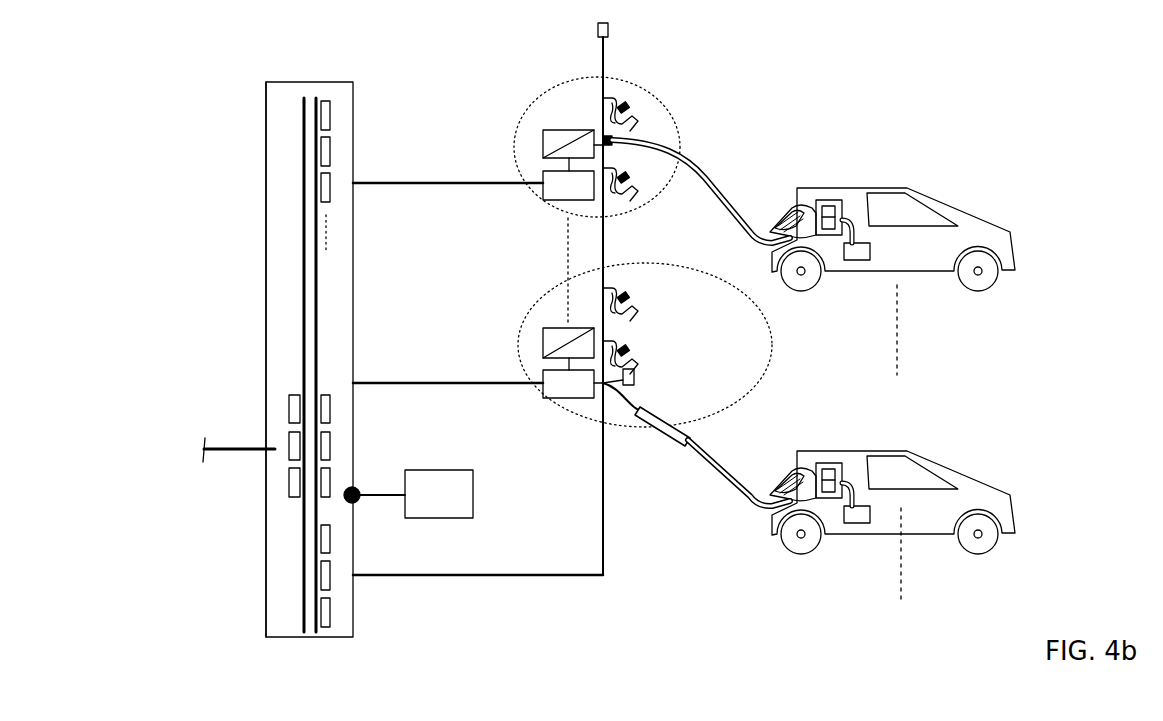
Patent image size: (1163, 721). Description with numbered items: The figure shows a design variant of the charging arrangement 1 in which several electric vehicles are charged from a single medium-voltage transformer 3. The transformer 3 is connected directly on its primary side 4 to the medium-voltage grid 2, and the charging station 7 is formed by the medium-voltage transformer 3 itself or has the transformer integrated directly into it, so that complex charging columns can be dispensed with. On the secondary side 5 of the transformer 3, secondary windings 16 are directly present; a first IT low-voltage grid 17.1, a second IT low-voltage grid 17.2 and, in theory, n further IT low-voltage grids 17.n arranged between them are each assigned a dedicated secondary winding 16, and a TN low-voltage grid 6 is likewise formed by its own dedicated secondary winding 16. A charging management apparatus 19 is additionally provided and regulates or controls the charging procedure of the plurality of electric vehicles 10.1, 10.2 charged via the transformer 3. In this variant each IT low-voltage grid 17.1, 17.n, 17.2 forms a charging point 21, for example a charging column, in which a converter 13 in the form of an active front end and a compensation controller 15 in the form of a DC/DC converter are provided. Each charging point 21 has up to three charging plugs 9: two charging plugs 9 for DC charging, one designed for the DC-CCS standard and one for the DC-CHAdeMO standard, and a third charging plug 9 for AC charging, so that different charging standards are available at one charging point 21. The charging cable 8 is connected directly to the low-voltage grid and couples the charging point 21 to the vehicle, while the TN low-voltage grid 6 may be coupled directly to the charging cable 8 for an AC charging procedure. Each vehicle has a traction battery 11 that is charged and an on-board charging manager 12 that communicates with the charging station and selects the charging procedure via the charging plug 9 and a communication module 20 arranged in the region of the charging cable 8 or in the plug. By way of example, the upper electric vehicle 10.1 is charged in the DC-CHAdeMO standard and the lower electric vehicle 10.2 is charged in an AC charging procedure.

The charging arrangement 1 is at (776, 106).
The medium-voltage grid 2 is at (215, 438).
The medium-voltage transformer 3 is at (337, 81).
The primary side 4 is at (273, 206).
The secondary side 5 is at (345, 113).
The TN low-voltage grid 6 is at (574, 578).
The charging station 7 is at (279, 78).
The charging cable 8 is at (712, 170).
The charging plug 9 is at (812, 470).
The upper electric vehicle 10.1 is at (967, 212).
The lower electric vehicle 10.2 is at (967, 475).
The traction battery 11 is at (857, 262).
The on-board charging manager 12 is at (840, 200).
The converter 13 is at (543, 191).
The compensation controller 15 is at (569, 130).
The secondary windings 16 is at (330, 110).
The first IT low-voltage grid 17.1 is at (473, 181).
The second IT low-voltage grid 17.2 is at (495, 381).
The n-th IT low-voltage grid 17.n is at (568, 263).
The charging management apparatus 19 is at (473, 500).
The communication module 20 is at (608, 29).
The charging point 21 is at (668, 210).